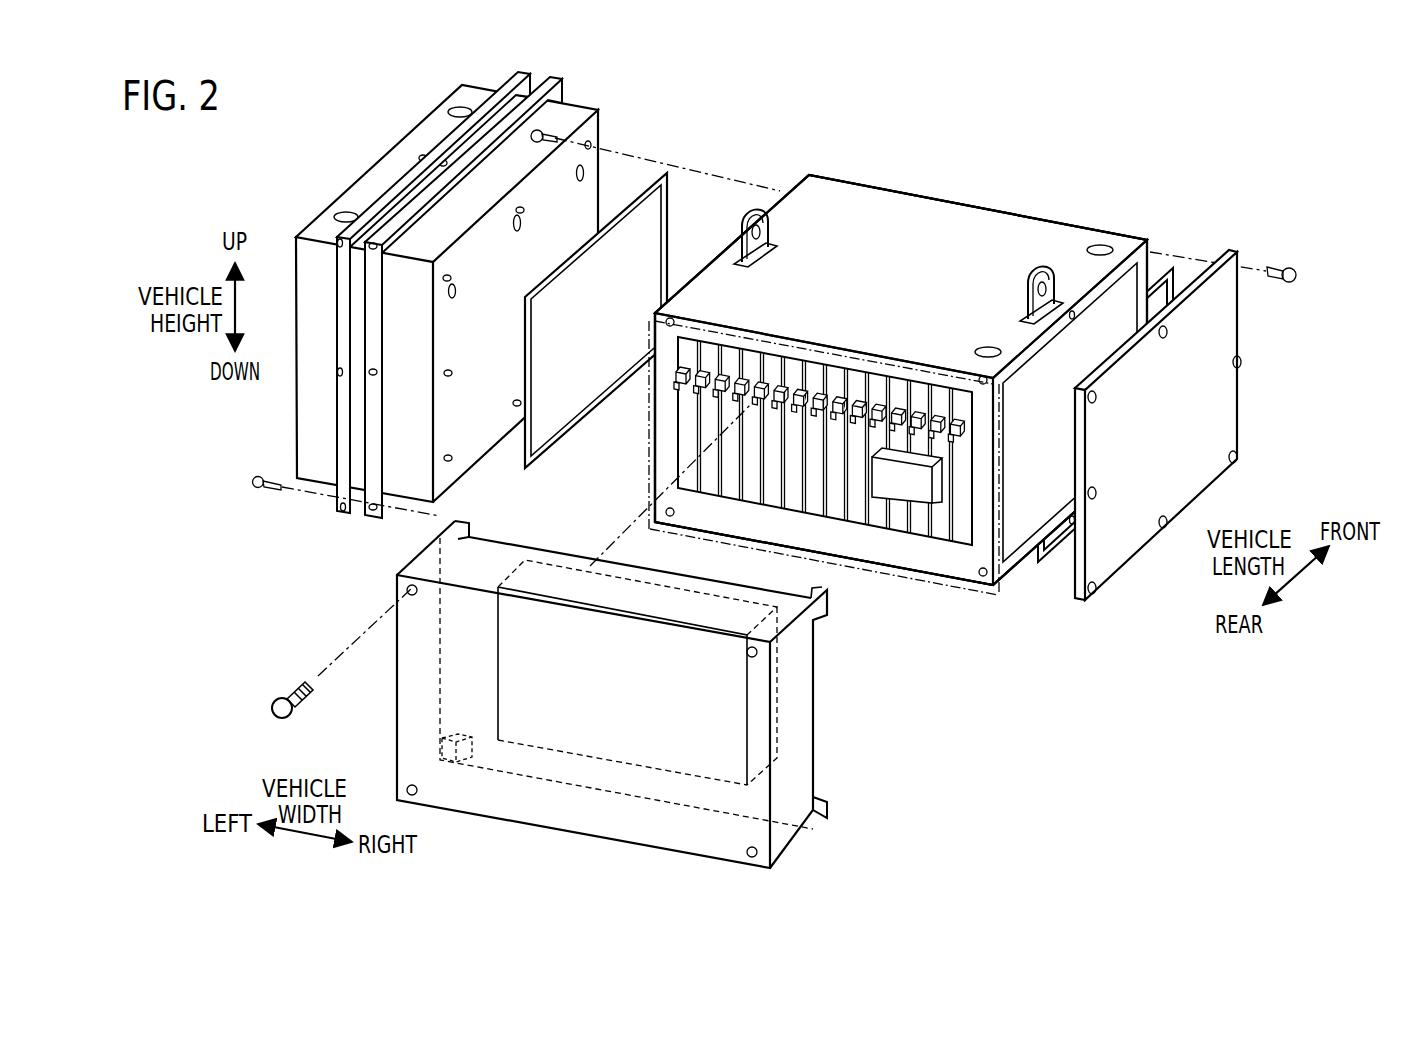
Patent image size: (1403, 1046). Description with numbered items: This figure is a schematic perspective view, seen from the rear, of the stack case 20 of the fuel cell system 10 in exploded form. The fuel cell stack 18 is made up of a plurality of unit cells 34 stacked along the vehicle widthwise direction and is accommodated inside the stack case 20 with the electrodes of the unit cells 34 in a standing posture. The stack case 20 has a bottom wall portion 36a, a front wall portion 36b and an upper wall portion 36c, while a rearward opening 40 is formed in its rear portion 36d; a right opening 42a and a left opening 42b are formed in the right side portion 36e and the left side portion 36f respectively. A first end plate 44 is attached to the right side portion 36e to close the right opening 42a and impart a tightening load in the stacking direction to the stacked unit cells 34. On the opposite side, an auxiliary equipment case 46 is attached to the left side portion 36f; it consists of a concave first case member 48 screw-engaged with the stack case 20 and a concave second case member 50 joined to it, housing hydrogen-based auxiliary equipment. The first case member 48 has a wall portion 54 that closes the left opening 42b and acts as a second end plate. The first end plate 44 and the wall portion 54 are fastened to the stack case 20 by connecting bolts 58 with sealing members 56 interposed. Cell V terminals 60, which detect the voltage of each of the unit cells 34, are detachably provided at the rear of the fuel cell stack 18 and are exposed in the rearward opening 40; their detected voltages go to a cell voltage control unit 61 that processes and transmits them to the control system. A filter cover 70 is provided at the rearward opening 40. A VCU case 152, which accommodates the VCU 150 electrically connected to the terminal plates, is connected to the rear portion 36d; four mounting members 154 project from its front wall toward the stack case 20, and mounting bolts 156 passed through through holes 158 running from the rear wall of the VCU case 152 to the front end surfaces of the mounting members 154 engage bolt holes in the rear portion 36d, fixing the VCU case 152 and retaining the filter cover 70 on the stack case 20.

The power storage device 10 is at (892, 382).
The fuel cell stack 18 is at (711, 358).
The stack case 20 is at (884, 382).
The unit cells 34 is at (860, 383).
The bottom wall portion 36a is at (858, 560).
The front wall portion 36b is at (957, 201).
The upper wall portion 36c is at (848, 200).
The rear portion 36d is at (666, 455).
The right side portion 36e is at (1020, 549).
The left side portion 36f is at (717, 260).
The rearward opening 40 is at (767, 363).
The right opening 42a is at (1083, 318).
The left opening 42b is at (789, 183).
The first end plate 44 is at (1218, 413).
The auxiliary equipment case 46 is at (447, 285).
The first case member 48 is at (513, 153).
The second case member 50 is at (467, 95).
The wall portion 54 is at (472, 440).
The sealing members 56 is at (655, 176).
The connecting bolts 58 is at (556, 122).
The cell V terminals 60 is at (922, 408).
The cell voltage control unit 61 is at (922, 525).
The filter cover 70 is at (948, 591).
The VCU 150 is at (560, 686).
The VCU case 152 is at (412, 757).
The mounting members 154 is at (468, 526).
The mounting bolts 156 is at (273, 697).
The through holes 158 is at (405, 590).